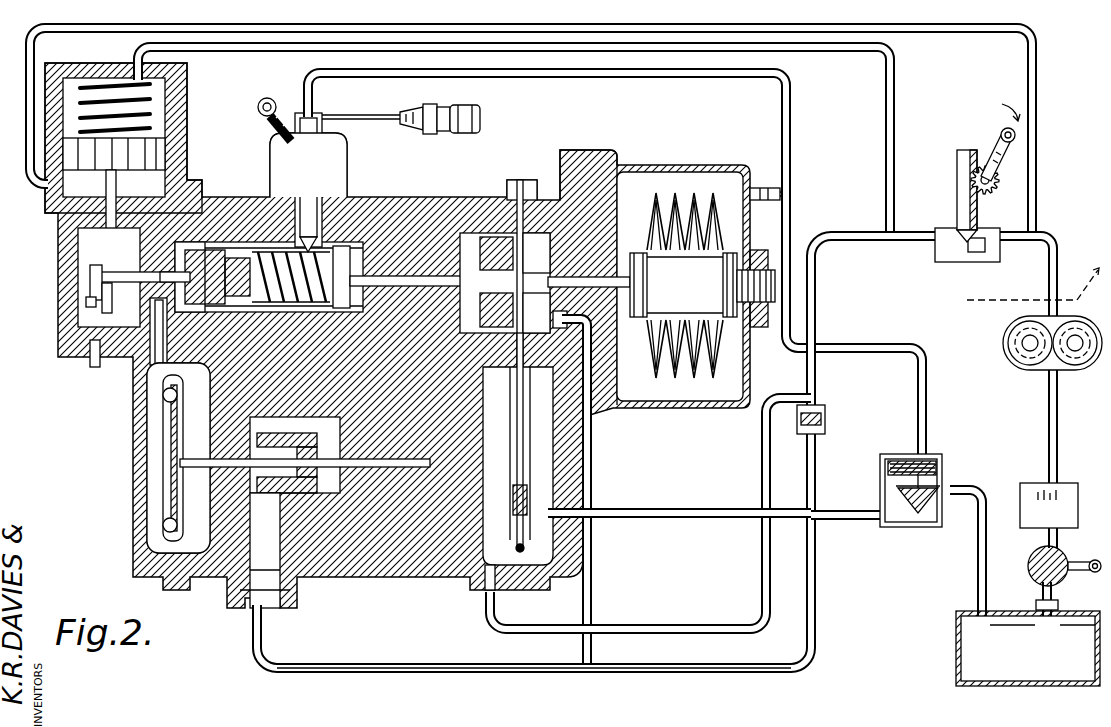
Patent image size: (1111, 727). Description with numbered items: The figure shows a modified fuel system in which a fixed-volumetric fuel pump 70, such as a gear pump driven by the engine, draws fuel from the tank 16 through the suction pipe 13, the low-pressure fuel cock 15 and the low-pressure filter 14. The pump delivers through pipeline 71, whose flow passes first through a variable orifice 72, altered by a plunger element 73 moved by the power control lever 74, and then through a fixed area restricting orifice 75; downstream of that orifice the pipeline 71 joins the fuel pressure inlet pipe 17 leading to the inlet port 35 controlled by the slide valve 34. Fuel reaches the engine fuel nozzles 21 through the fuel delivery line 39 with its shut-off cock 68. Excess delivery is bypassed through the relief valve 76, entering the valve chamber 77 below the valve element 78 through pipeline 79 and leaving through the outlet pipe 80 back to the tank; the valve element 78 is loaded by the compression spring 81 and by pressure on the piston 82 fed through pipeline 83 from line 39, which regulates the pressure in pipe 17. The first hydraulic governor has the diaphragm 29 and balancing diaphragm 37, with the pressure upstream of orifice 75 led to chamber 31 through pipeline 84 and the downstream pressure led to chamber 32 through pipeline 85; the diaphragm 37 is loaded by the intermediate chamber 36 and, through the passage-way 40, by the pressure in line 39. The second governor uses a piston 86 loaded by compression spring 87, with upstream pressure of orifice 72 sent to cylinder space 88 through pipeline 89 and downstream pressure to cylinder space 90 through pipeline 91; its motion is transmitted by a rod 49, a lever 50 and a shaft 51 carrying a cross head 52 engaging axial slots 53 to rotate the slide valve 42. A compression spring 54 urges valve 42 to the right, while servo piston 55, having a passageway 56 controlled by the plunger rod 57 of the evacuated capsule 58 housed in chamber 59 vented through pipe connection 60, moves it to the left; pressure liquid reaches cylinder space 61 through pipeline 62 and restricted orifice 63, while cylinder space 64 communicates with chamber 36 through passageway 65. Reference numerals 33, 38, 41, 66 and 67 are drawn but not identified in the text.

The suction pipe 13 is at (1040, 594).
The low-pressure filter 14 is at (1056, 479).
The low-pressure fuel cock 15 is at (1033, 556).
The tank 16 is at (973, 641).
The fuel pressure inlet pipe 17 is at (463, 662).
The engine fuel nozzles 21 is at (480, 116).
The diaphragm 29 is at (527, 482).
The chamber 31 is at (503, 513).
The chamber 32 is at (540, 430).
The valve chamber 33 is at (507, 460).
The slide valve 34 is at (268, 495).
The inlet port 35 is at (238, 465).
The intermediate chamber 36 is at (192, 438).
The balancing diaphragm 37 is at (165, 470).
The diaphragm plate 38 is at (165, 486).
The fuel delivery line 39 is at (365, 111).
The passage-way 40 is at (157, 343).
The chamber 41 is at (153, 410).
The slide valve 42 is at (415, 200).
The rod 49 is at (92, 270).
The lever 50 is at (90, 292).
The shaft 51 is at (102, 305).
The cross head 52 is at (240, 310).
The axial slots 53 is at (247, 243).
The compression spring 54 is at (295, 305).
The piston 55 is at (505, 180).
The passageway 56 is at (478, 237).
The plunger rod 57 is at (555, 200).
The evacuated capsule 58 is at (652, 240).
The chamber 59 is at (726, 390).
The pipe connection 60 is at (758, 188).
The cylinder space 61 is at (545, 273).
The pipeline 62 is at (593, 571).
The restricted orifice 63 is at (553, 318).
The cylinder space 64 is at (517, 466).
The passageway 65 is at (338, 310).
The needle valve 66 is at (320, 246).
The plunger 67 is at (312, 232).
The shut-off cock 68 is at (275, 165).
The fuel pump 70 is at (1020, 328).
The pipeline 71 is at (818, 457).
The variable orifice 72 is at (953, 248).
The plunger element 73 is at (963, 183).
The power control lever 74 is at (995, 150).
The fixed area restricting orifice 75 is at (840, 398).
The relief valve 76 is at (880, 491).
The valve chamber 77 is at (903, 520).
The valve element 78 is at (940, 512).
The pipeline 79 is at (843, 519).
The outlet pipe 80 is at (977, 579).
The compression spring 81 is at (940, 460).
The piston 82 is at (942, 462).
The pipeline 83 is at (787, 91).
The pipeline 84 is at (762, 468).
The pipeline 85 is at (637, 517).
The piston 86 is at (157, 147).
The compression spring 87 is at (150, 97).
The cylinder space 88 is at (82, 187).
The pipeline 89 is at (288, 34).
The cylinder space 90 is at (72, 80).
The pipeline 91 is at (888, 70).